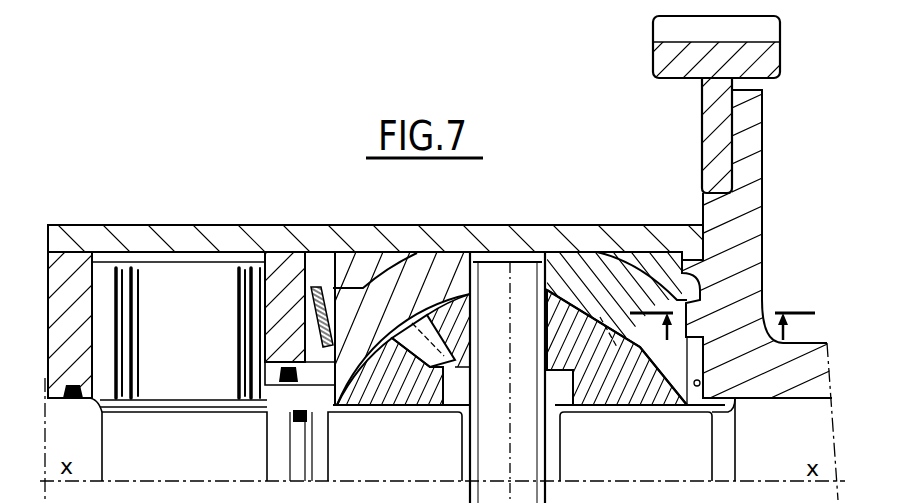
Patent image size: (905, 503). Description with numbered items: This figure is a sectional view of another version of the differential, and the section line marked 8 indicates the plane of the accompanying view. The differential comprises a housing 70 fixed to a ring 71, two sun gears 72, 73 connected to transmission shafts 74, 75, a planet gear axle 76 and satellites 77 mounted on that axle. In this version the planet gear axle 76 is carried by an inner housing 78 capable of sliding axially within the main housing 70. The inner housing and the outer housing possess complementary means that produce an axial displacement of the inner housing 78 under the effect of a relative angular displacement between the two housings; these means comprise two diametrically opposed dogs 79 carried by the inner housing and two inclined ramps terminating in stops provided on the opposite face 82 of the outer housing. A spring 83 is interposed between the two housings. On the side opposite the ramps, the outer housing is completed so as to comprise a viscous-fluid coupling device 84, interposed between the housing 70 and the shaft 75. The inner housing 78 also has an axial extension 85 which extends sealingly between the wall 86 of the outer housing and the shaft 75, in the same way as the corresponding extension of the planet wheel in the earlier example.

The housing 70 is at (560, 240).
The ring 71 is at (680, 70).
The sun gear 72 is at (632, 402).
The sun gear 73 is at (380, 402).
The transmission shaft 74 is at (770, 439).
The transmission shaft 75 is at (184, 446).
The planet gear axle 76 is at (507, 377).
The satellites 77 is at (457, 300).
The inner housing 78 is at (417, 267).
The dogs 79 is at (656, 266).
The opposite face 82 is at (702, 386).
The spring 83 is at (322, 288).
The viscous-fluid coupling device 84 is at (179, 280).
The axial extension 85 is at (312, 414).
The wall 86 is at (283, 268).
The section line 8- 8 is at (722, 328).